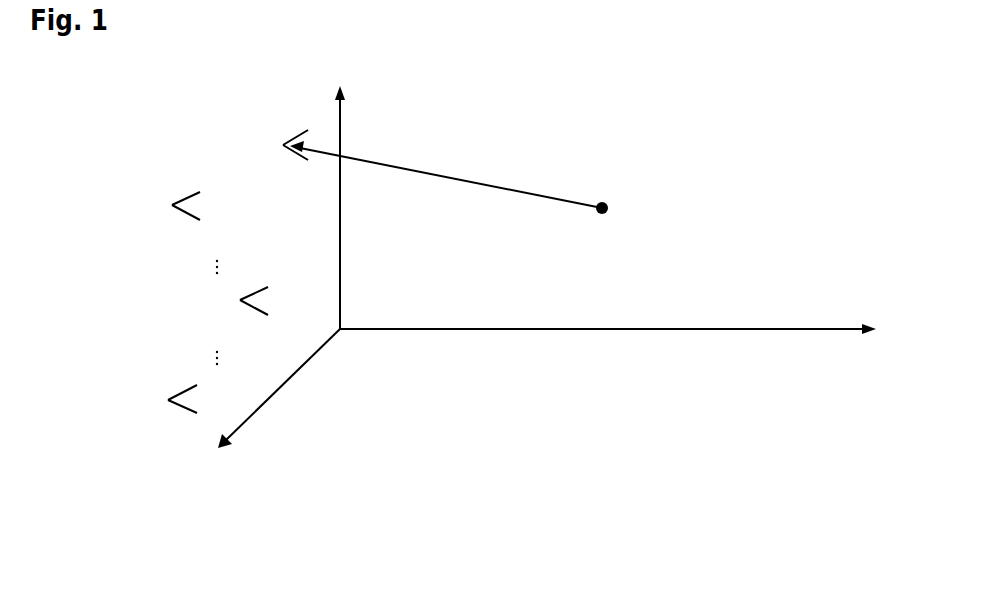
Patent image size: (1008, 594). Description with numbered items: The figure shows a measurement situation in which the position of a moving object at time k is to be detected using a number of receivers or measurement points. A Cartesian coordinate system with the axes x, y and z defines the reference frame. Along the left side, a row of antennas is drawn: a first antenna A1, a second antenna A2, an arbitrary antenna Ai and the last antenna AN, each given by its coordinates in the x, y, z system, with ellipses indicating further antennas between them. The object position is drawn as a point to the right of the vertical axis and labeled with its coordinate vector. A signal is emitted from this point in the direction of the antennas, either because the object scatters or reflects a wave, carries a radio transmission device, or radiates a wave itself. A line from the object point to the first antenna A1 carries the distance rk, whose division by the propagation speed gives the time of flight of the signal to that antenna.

The antenna A1 is at (283, 145).
The antenna A2 is at (172, 205).
The antenna Ai is at (240, 300).
The antenna AN is at (168, 400).
The distance rk is at (446, 174).
The x axis x is at (340, 197).
The y axis y is at (270, 394).
The z axis z is at (620, 324).